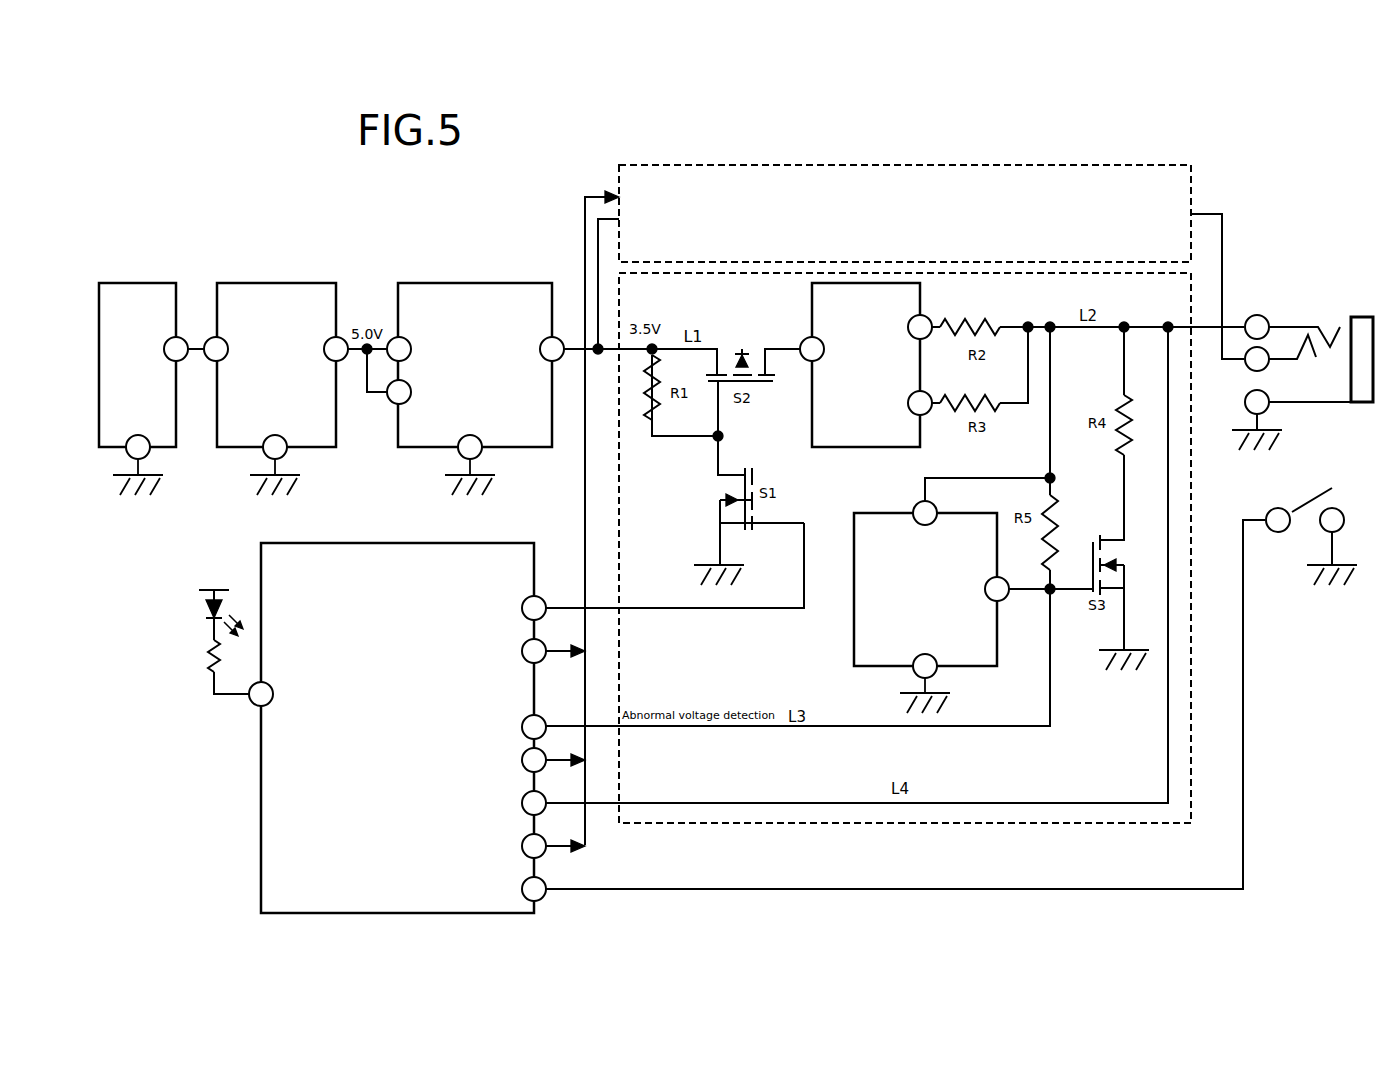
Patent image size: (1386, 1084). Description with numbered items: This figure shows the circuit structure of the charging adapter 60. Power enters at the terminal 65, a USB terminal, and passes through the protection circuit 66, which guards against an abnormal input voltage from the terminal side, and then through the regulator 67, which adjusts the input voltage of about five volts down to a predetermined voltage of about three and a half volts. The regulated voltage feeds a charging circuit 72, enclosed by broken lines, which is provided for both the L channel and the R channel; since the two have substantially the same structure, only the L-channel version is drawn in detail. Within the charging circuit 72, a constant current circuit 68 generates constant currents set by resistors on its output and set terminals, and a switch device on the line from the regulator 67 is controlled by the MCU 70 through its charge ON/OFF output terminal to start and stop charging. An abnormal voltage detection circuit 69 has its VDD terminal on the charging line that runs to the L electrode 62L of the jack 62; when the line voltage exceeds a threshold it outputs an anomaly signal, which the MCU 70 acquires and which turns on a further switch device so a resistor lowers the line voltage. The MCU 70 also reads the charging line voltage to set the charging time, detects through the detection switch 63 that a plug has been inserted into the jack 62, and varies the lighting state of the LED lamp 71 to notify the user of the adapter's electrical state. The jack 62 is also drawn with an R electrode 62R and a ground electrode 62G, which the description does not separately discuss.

The charging adapter 60 is at (615, 140).
The jack 62 is at (1362, 317).
The L electrode 62L is at (1304, 327).
The right channel terminal 62R is at (1287, 359).
The ground terminal 62G is at (1323, 405).
The detection switch 63 is at (1302, 533).
The terminal 65 is at (139, 283).
The protection circuit 66 is at (275, 283).
The regulator 67 is at (479, 283).
The constant current circuit 68 is at (828, 447).
The abnormal voltage detection circuit 69 is at (854, 640).
The MCU 70 is at (394, 543).
The LED lamp 71 is at (188, 645).
The charging circuit 72 is at (906, 165).